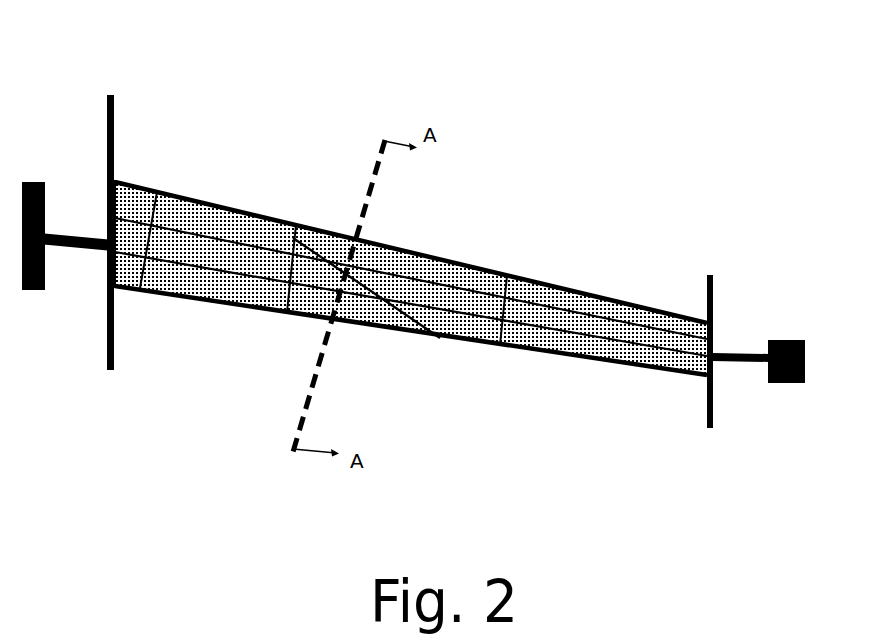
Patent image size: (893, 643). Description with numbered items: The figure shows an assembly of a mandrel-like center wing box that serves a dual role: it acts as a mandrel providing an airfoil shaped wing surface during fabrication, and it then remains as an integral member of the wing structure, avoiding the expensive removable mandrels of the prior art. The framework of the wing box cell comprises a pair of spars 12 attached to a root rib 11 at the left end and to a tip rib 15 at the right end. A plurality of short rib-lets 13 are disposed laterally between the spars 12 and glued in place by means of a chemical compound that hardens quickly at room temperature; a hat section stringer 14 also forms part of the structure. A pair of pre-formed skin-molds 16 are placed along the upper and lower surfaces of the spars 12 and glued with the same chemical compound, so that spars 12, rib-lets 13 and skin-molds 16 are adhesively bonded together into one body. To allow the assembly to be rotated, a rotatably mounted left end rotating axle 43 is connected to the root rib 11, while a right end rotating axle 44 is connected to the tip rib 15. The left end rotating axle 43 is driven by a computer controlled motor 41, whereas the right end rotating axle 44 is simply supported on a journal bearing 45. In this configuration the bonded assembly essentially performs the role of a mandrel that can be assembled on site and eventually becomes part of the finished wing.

The root rib 11 is at (105, 100).
The spars 12 is at (207, 303).
The short rib-lets 13 is at (440, 338).
The hat section stringer 14 is at (432, 307).
The tip rib 15 is at (713, 295).
The pre-formed skin-molds 16 is at (367, 307).
The computer controlled motor 41 is at (27, 181).
The left end rotating axle 43 is at (88, 251).
The right end rotating axle 44 is at (733, 362).
The journal bearing 45 is at (810, 347).